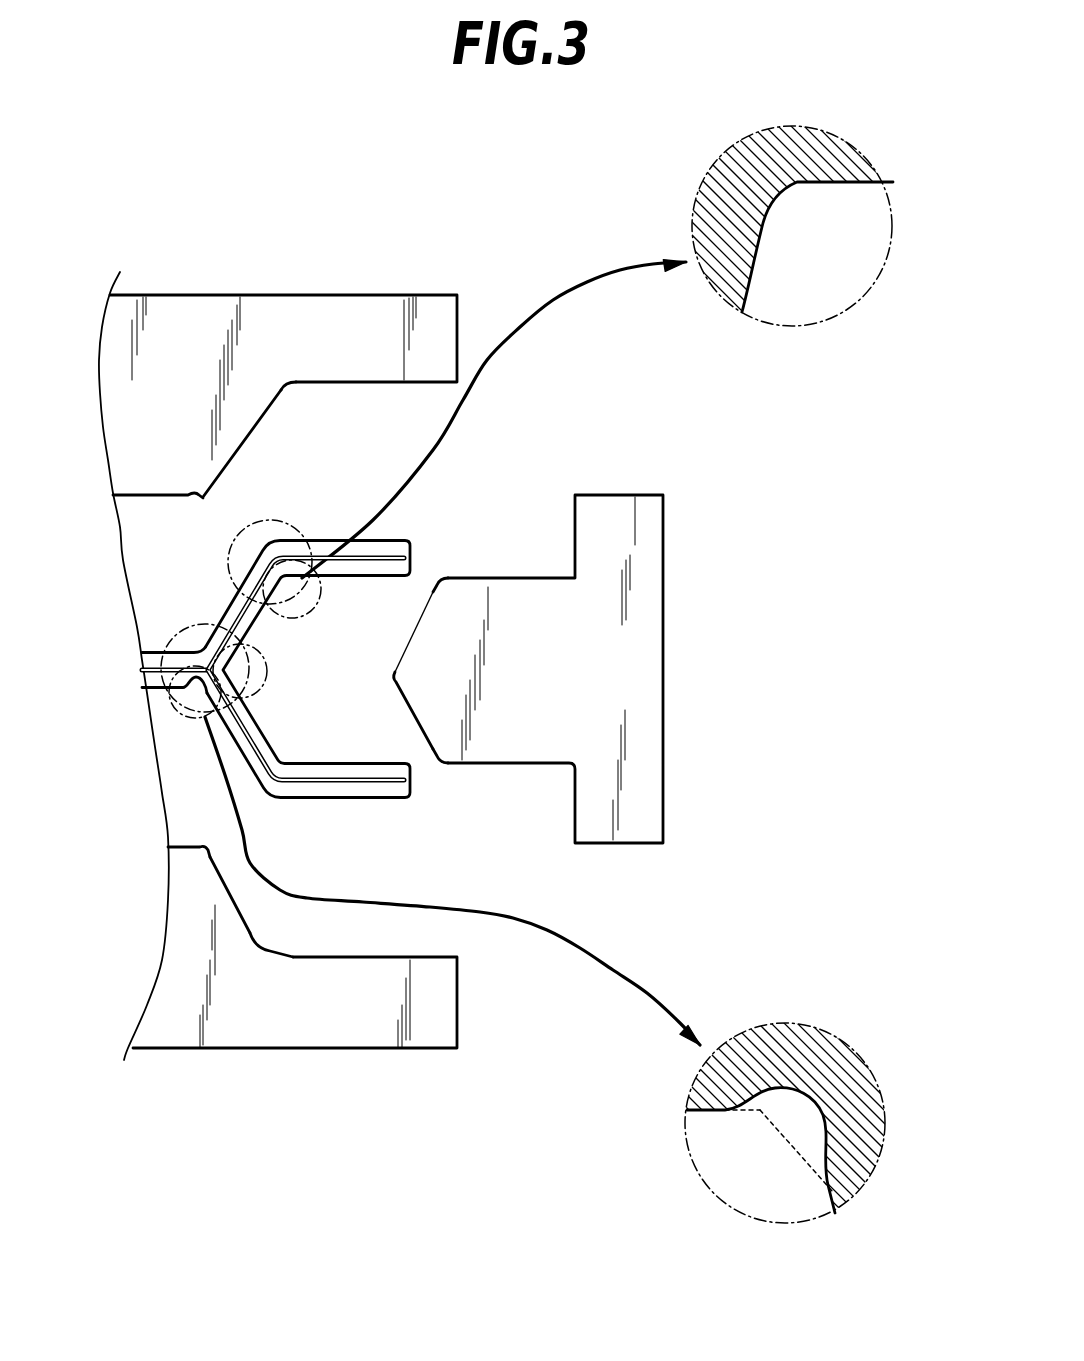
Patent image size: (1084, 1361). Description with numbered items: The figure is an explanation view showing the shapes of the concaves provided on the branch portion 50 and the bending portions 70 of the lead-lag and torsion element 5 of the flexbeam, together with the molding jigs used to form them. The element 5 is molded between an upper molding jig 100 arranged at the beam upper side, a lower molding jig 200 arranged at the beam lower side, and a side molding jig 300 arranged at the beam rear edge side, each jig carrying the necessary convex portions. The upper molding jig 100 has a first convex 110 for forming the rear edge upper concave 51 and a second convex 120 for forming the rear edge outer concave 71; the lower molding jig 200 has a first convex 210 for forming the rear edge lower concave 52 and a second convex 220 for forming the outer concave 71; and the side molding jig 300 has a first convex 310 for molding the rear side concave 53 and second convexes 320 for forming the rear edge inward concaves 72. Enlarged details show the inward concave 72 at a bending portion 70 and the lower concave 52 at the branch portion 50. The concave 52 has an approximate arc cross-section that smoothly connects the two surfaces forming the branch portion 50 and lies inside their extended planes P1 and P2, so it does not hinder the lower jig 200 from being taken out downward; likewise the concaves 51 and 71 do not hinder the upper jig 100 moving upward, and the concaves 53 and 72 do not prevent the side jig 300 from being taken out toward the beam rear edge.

The lead-lag and torsion element 5 is at (425, 527).
The branch portion 50 is at (198, 632).
The rear edge upper concave 51 is at (195, 642).
The rear edge lower concave 52 is at (204, 702).
The rear side concave 53 is at (226, 672).
The bending portion 70 is at (303, 532).
The rear edge outer concave 71 is at (265, 548).
The rear edge inward concave 72 is at (295, 595).
The upper molding jig 100 is at (257, 305).
The first convex 110 is at (205, 493).
The second convex 120 is at (247, 387).
The lower molding jig 200 is at (290, 1048).
The first convex 210 is at (207, 850).
The second convex 220 is at (260, 953).
The side molding jig 300 is at (650, 745).
The first convex 310 is at (397, 673).
The second convex 320 is at (452, 580).
The extended plane P1 is at (732, 1110).
The extended plane P2 is at (808, 1170).